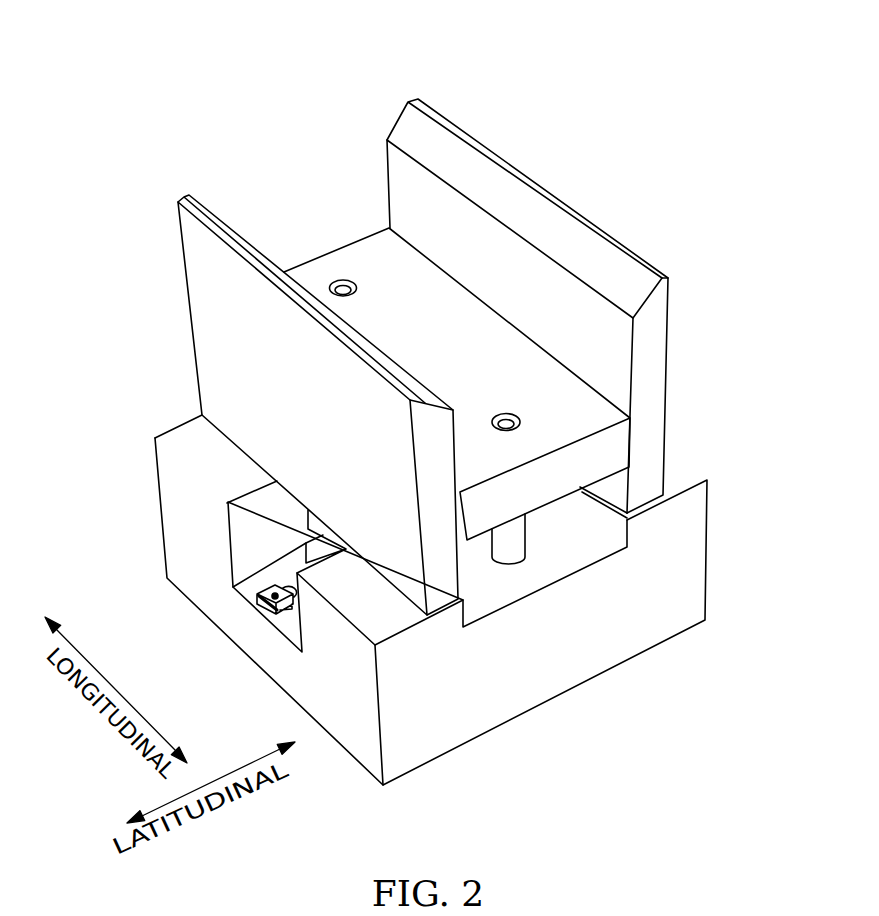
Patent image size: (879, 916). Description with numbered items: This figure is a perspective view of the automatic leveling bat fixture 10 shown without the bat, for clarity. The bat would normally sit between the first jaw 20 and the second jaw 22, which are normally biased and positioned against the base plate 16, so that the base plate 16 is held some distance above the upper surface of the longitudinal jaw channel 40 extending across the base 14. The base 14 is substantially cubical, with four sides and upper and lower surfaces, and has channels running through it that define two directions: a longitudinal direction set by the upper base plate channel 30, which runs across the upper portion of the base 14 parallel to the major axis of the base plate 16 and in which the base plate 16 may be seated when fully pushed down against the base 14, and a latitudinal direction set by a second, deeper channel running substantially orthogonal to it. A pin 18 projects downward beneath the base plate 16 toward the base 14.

The automatic leveling bat fixture 10 is at (420, 405).
The base 14 is at (573, 660).
The base plate 16 is at (592, 462).
The pin 18 is at (516, 558).
The first jaw 20 is at (217, 293).
The second jaw 22 is at (662, 318).
The upper base plate channel 30 is at (567, 535).
The longitudinal jaw channel 40 is at (265, 540).